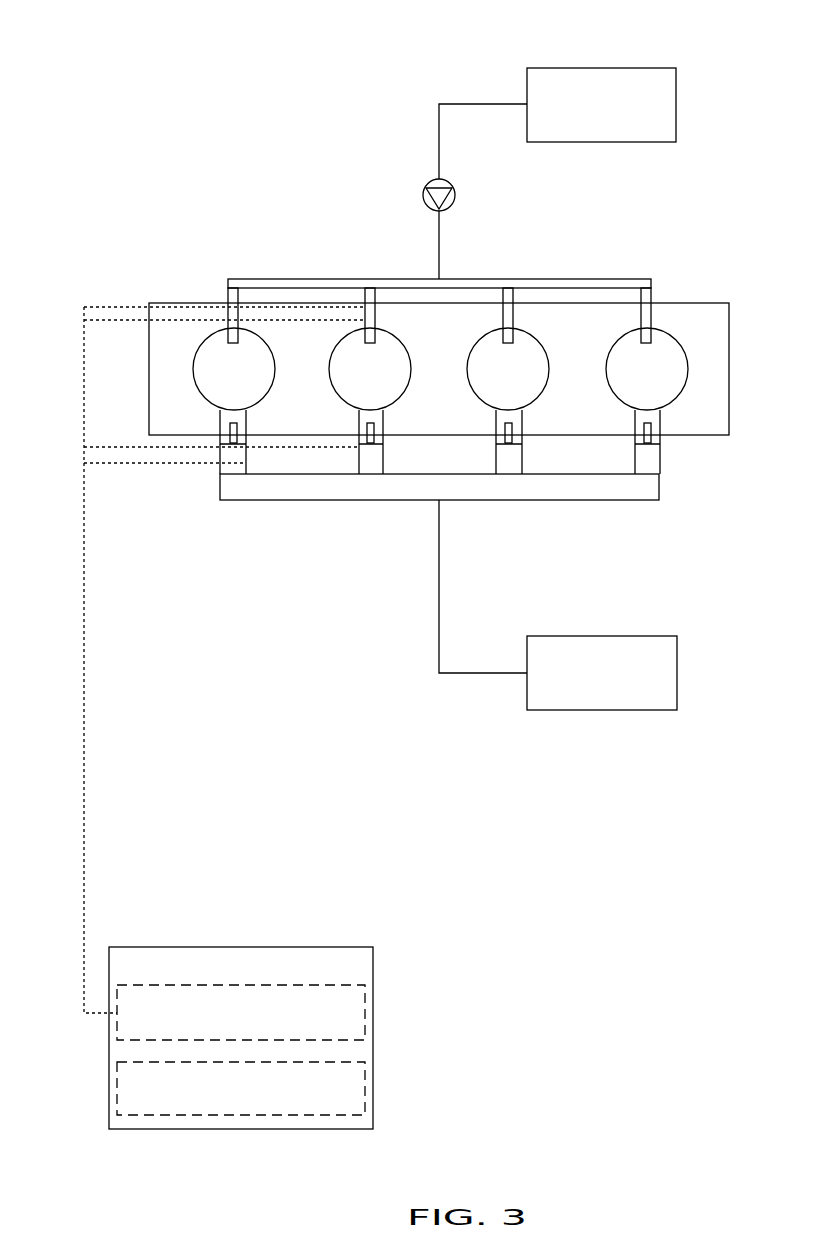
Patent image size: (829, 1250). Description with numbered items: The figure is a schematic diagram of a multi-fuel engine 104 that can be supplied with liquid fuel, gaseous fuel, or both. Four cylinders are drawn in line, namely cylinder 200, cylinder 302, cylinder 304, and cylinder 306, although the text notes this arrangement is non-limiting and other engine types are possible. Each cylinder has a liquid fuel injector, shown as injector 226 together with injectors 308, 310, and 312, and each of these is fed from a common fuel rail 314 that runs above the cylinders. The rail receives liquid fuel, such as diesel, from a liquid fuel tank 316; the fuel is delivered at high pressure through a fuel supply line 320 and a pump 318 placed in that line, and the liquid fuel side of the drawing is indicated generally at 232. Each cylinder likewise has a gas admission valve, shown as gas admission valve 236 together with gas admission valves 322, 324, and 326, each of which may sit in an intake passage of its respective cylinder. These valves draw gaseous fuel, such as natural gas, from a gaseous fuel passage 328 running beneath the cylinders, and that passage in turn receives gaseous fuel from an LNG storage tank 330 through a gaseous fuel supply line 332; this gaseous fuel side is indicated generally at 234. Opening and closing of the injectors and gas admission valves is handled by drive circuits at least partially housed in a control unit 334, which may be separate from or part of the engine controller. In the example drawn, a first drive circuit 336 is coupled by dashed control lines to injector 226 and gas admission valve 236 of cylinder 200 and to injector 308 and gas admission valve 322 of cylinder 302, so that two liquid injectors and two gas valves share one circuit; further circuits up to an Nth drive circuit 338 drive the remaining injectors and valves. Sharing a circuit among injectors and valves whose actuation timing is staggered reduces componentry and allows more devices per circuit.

The engine 104 is at (712, 308).
The cylinder 200 is at (250, 381).
The injector 226 is at (232, 300).
The supply system 232 is at (609, 48).
The return system 234 is at (607, 755).
The gas admission valve 236 is at (243, 458).
The cylinder 302 is at (386, 381).
The cylinder 304 is at (524, 381).
The cylinder 306 is at (663, 381).
The injector 308 is at (370, 292).
The injector 310 is at (508, 292).
The injector 312 is at (646, 292).
The common fuel rail 314 is at (283, 279).
The liquid fuel tank 316 is at (617, 115).
The pump 318 is at (455, 191).
The fuel supply line 320 is at (440, 240).
The gas admission valve 322 is at (377, 458).
The gas admission valve 324 is at (504, 458).
The gas admission valve 326 is at (642, 458).
The gaseous fuel passage 328 is at (432, 500).
The LNG storage tank 330 is at (618, 684).
The gaseous fuel supply line 332 is at (440, 605).
The control unit 334 is at (326, 976).
The first drive circuit 336 is at (365, 1016).
The Nth drive circuit 338 is at (365, 1092).